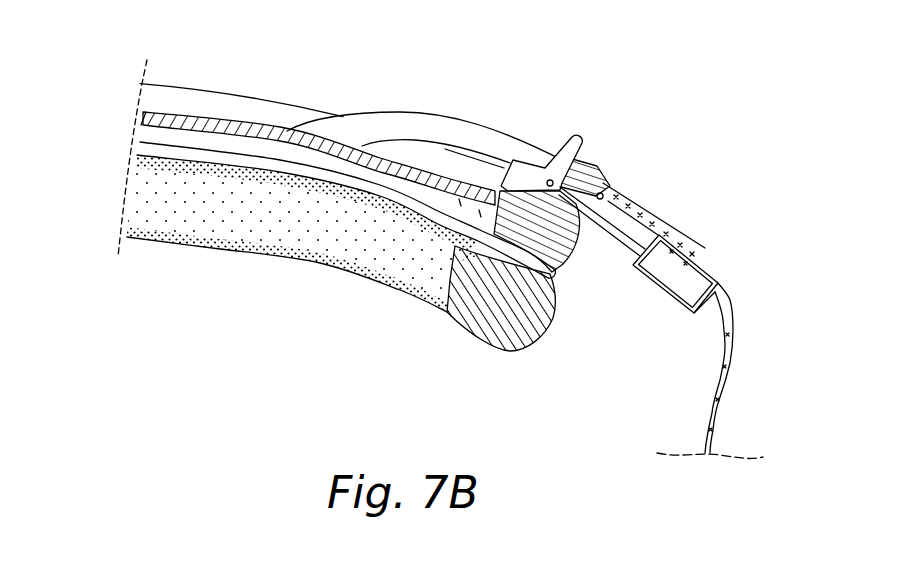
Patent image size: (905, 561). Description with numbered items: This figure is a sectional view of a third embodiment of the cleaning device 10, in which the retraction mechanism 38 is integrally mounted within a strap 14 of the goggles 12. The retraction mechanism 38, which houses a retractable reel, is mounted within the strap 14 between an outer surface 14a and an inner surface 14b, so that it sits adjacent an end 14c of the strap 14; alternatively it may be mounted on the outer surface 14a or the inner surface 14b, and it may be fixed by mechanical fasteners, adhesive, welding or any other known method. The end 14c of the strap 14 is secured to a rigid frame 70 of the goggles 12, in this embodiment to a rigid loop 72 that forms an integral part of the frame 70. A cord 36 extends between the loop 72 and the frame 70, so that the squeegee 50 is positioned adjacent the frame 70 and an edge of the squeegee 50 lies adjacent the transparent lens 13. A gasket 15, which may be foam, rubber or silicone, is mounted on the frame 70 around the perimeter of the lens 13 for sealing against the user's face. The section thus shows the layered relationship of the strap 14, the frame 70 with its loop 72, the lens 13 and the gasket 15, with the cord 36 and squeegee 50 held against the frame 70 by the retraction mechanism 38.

The cleaning device 10 is at (712, 108).
The goggles 12 is at (177, 147).
The transparent lens 13 is at (138, 116).
The strap 14 is at (731, 296).
The outer surface 14a is at (700, 255).
The inner surface 14b is at (648, 277).
The end of the strap 14c is at (628, 201).
The gasket 15 is at (481, 336).
The cord 36 is at (617, 237).
The retraction mechanism 38 is at (687, 300).
The squeegee 50 is at (530, 158).
The rigid frame 70 is at (282, 110).
The rigid loop 72 is at (593, 168).